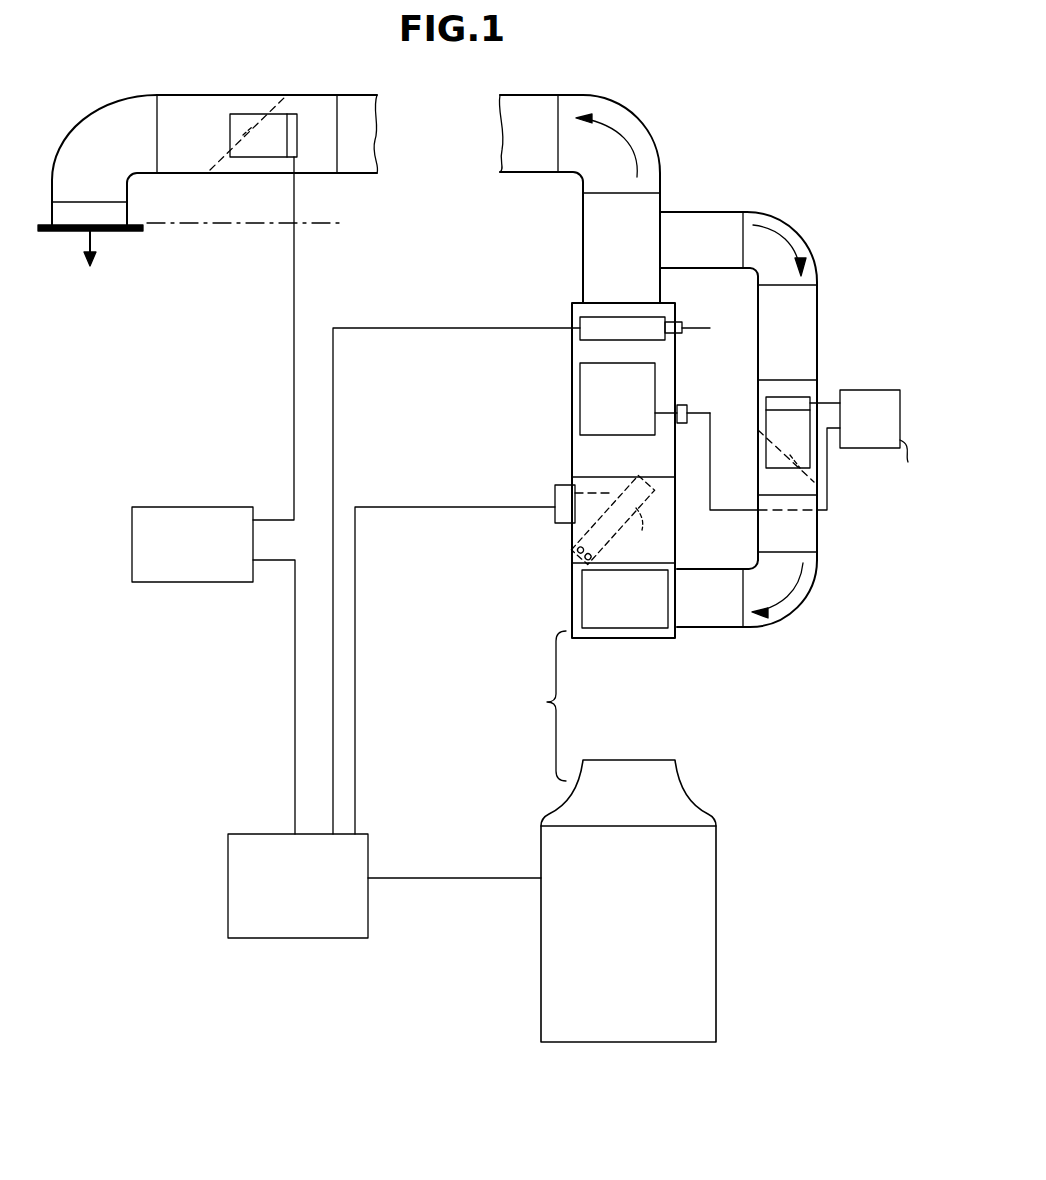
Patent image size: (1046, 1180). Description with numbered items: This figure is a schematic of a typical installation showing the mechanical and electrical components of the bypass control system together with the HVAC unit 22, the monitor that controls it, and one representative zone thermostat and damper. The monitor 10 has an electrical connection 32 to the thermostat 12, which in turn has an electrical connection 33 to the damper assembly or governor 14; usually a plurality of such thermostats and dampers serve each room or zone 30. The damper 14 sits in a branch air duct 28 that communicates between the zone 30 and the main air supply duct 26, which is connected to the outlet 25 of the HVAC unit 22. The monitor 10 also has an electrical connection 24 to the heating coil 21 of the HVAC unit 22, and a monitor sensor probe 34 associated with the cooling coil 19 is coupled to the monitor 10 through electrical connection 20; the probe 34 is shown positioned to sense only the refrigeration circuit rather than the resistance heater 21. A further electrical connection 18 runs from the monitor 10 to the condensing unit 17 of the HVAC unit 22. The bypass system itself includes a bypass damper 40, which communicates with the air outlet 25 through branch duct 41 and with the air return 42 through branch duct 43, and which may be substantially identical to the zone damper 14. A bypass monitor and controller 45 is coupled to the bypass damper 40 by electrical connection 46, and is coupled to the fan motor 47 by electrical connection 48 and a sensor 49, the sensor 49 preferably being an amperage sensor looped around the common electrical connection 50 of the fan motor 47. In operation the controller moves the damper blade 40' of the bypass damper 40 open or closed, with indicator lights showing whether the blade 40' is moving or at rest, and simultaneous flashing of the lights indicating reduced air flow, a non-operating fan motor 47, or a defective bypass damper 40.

The monitor 10 is at (298, 886).
The thermostat 12 is at (192, 544).
The damper assembly 14 is at (230, 95).
The condensing unit 17 is at (628, 901).
The electrical connection 18 is at (448, 878).
The cooling coil 19 is at (613, 519).
The electrical connection 20 is at (432, 507).
The heating coil 21 is at (651, 317).
The HVAC unit 22 is at (547, 702).
The electrical connection 24 is at (432, 328).
The outlet 25 is at (583, 230).
The main air supply duct 26 is at (532, 95).
The branch air duct 28 is at (352, 95).
The zone 30 is at (218, 224).
The electrical connection 32 is at (295, 671).
The electrical connection 33 is at (294, 322).
The monitor sensor probe 34 is at (553, 522).
The bypass damper 40 is at (804, 410).
The damper blade 40' is at (783, 476).
The branch duct 41 is at (708, 212).
The air return 42 is at (580, 600).
The branch duct 43 is at (706, 628).
The bypass monitor and controller 45 is at (892, 452).
The electrical connection 46 is at (827, 403).
The fan motor 47 is at (580, 406).
The electrical connection 48 is at (704, 510).
The sensor 49 is at (688, 408).
The common electrical connection 50 is at (668, 418).